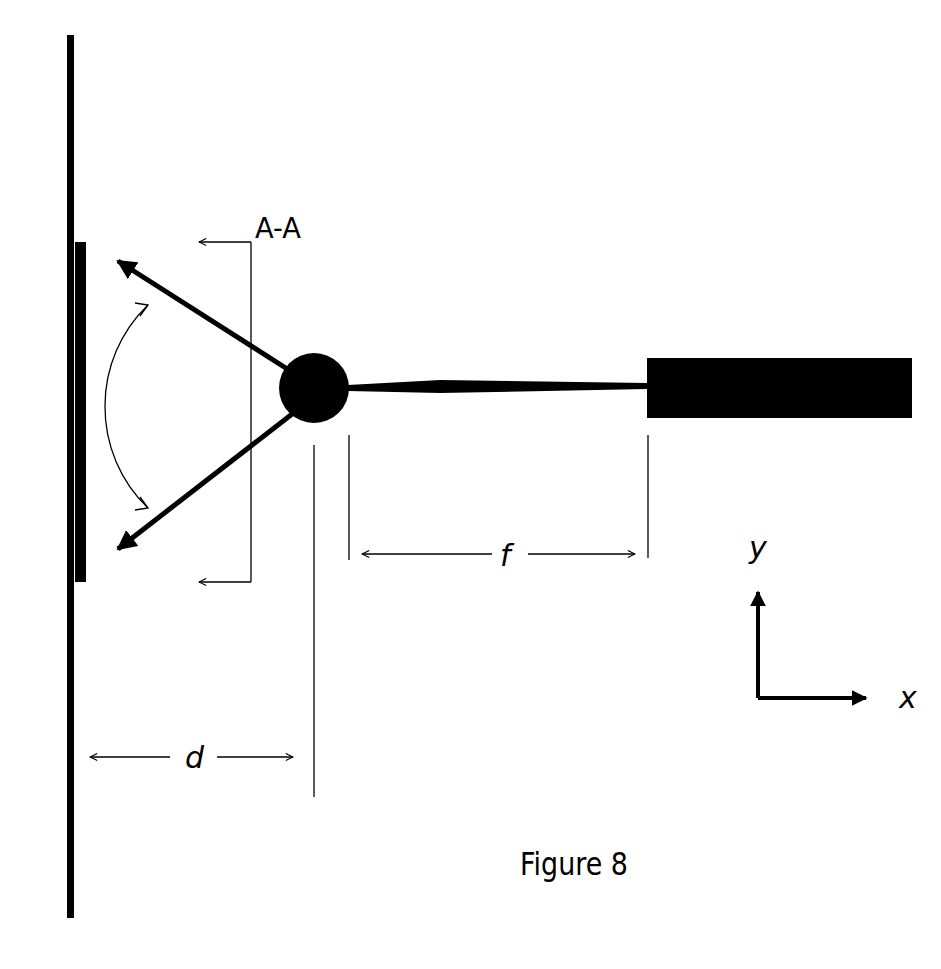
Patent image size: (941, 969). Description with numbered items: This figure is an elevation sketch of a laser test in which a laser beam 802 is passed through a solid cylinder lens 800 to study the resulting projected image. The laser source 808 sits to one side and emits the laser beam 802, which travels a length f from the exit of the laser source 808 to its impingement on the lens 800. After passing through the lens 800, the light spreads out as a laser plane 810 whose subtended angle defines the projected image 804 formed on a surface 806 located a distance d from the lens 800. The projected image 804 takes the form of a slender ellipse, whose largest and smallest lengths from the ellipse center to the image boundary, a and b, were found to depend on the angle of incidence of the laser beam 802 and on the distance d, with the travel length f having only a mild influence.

The solid cylinder lens 800 is at (332, 357).
The laser beam 802 is at (488, 382).
The projected image 804 is at (87, 240).
The surface 806 is at (73, 143).
The laser source 808 is at (767, 358).
The laser plane 810 is at (105, 407).